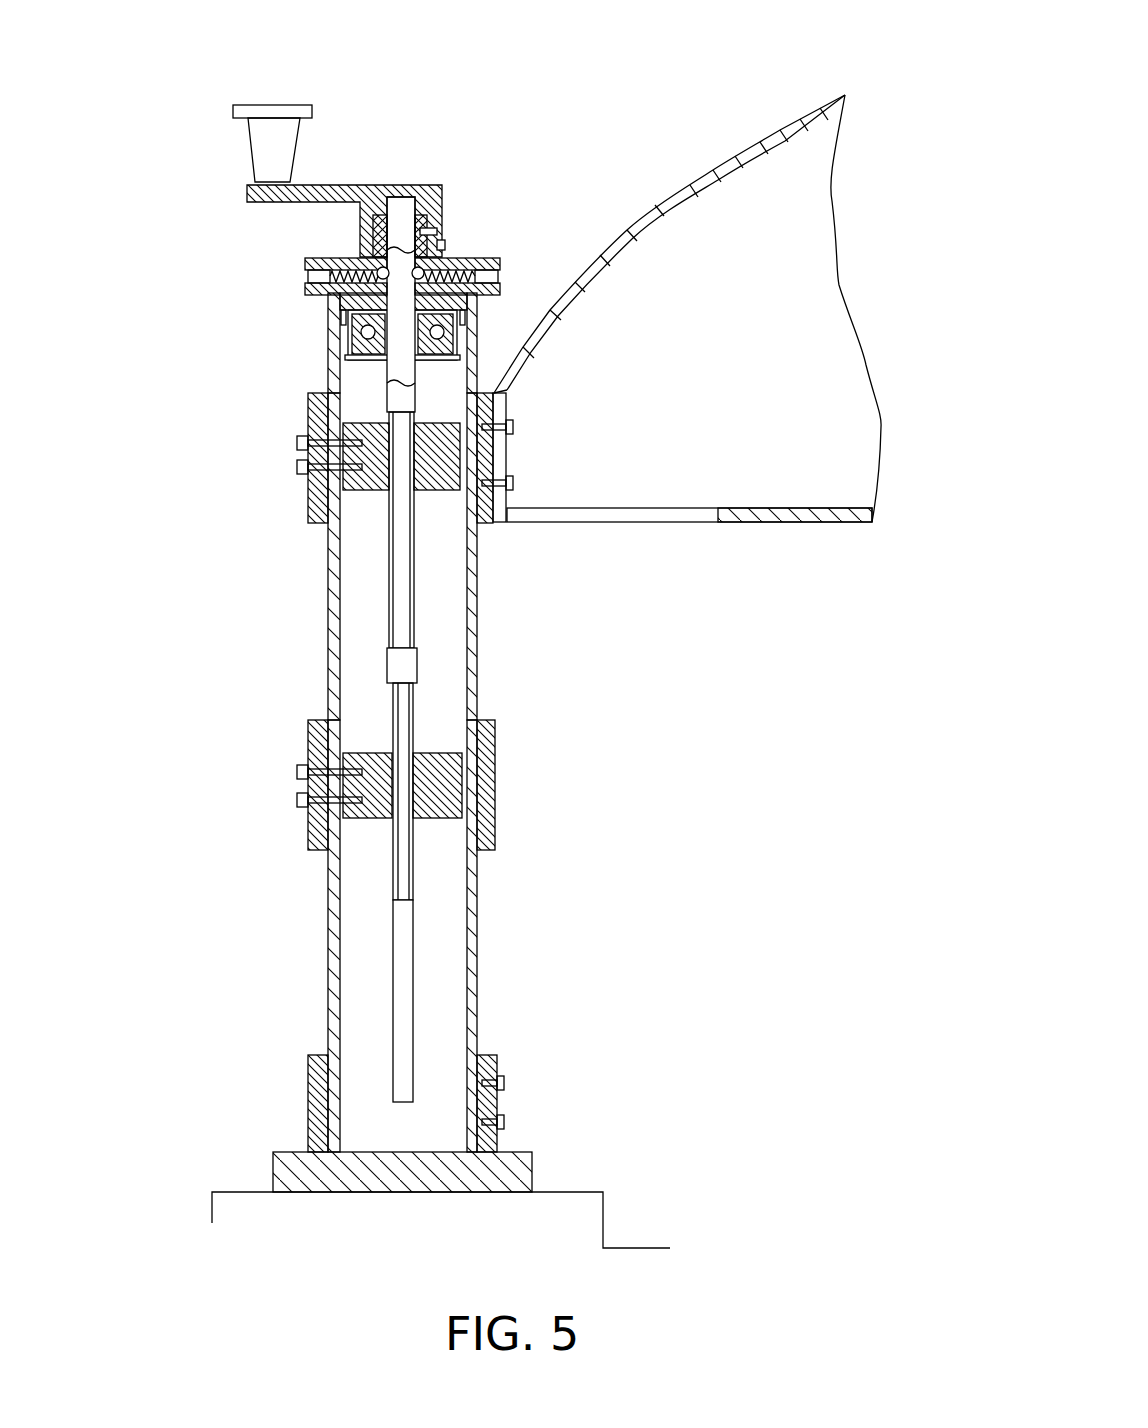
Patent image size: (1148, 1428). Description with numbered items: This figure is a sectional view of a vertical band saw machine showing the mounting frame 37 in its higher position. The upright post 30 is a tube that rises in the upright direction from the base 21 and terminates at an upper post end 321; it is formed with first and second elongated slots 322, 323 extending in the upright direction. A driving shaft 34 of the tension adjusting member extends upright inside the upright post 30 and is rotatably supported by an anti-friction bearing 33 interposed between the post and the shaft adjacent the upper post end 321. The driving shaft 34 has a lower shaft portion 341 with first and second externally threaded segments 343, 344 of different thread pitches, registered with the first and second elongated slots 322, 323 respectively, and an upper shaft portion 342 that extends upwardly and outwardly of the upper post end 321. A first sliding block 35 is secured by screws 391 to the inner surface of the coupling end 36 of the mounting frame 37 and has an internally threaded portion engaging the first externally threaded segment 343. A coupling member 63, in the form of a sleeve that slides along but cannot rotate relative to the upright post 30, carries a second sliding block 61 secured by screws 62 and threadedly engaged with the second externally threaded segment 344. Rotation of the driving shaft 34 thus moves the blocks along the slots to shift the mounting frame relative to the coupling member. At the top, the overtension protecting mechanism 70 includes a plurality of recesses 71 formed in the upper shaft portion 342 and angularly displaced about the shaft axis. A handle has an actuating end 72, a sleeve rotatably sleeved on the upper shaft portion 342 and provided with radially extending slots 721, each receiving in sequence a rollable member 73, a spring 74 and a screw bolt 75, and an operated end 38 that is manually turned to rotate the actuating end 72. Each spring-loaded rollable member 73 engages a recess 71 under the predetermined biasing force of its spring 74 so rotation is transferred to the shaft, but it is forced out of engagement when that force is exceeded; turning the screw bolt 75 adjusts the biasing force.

The base 21 is at (640, 1257).
The upright post 30 is at (342, 722).
The upper post end 321 is at (327, 357).
The first elongated slot 322 is at (335, 595).
The second elongated slot 323 is at (335, 885).
The anti-friction bearing 33 is at (323, 327).
The driving shaft 34 is at (394, 587).
The lower shaft portion 341 is at (413, 1005).
The upper shaft portion 342 is at (403, 213).
The first externally threaded segment 343 is at (402, 562).
The second externally threaded segment 344 is at (400, 705).
The first sliding block 35 is at (375, 486).
The coupling end 36 is at (318, 412).
The mounting frame 37 is at (697, 203).
The operated end 38 is at (272, 104).
The screws 391 is at (297, 437).
The second sliding block 61 is at (433, 810).
The screws 62 is at (300, 770).
The coupling member 63 is at (492, 779).
The overtension protecting mechanism 70 is at (388, 230).
The recesses 71 is at (375, 237).
The actuating end 72 is at (420, 247).
The radially extending slots 721 is at (442, 245).
The rollable member 73 is at (382, 253).
The spring 74 is at (332, 298).
The screw bolt 75 is at (308, 275).